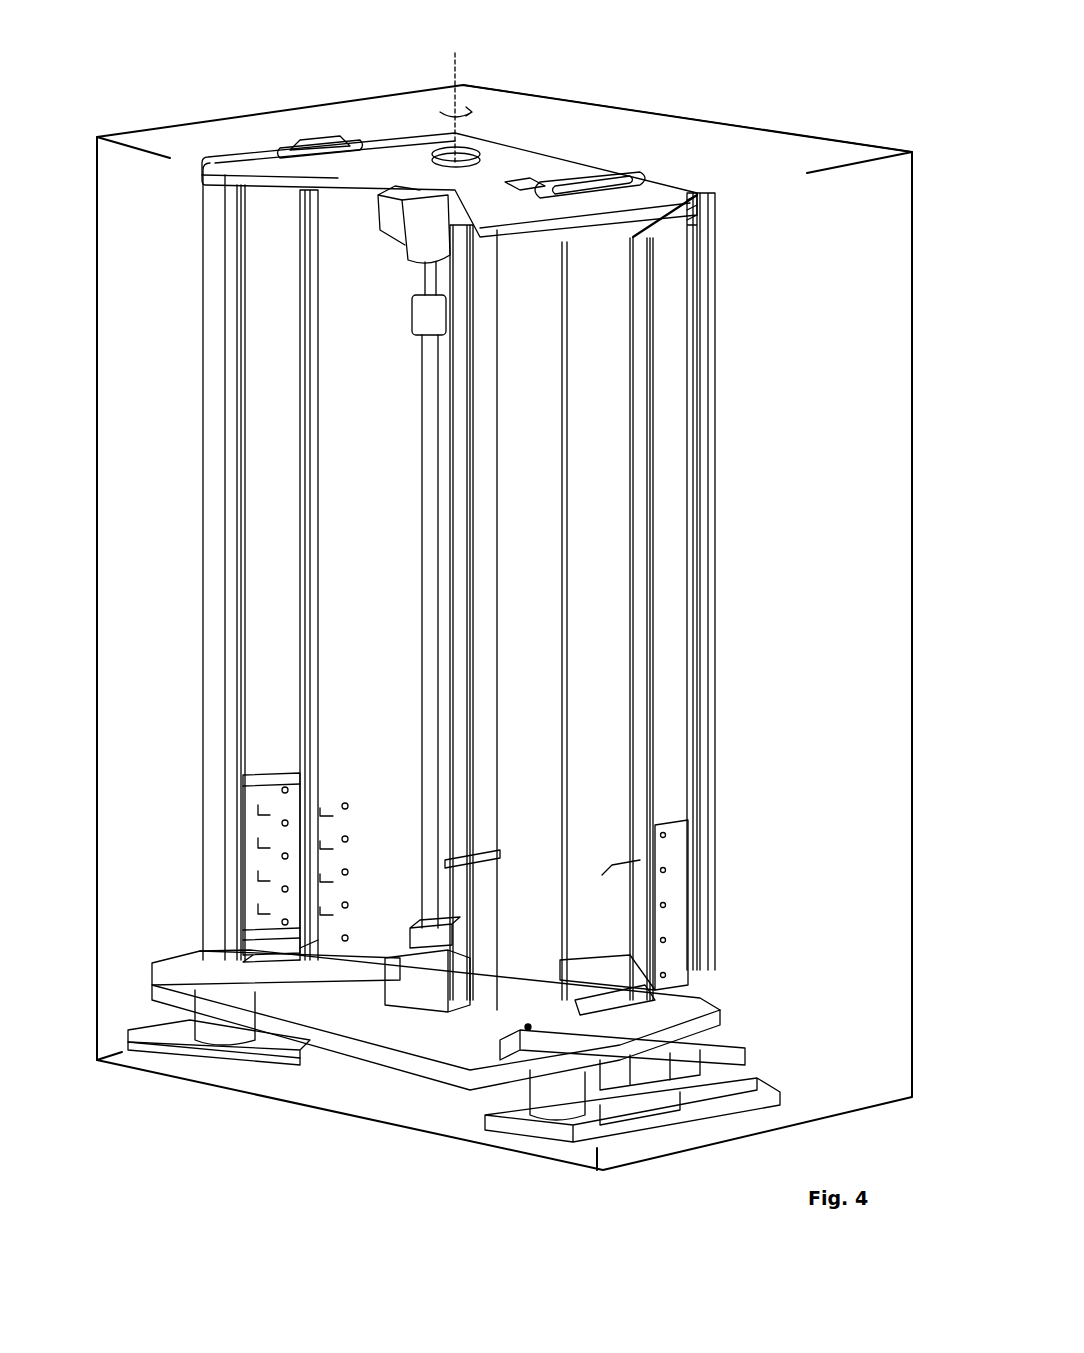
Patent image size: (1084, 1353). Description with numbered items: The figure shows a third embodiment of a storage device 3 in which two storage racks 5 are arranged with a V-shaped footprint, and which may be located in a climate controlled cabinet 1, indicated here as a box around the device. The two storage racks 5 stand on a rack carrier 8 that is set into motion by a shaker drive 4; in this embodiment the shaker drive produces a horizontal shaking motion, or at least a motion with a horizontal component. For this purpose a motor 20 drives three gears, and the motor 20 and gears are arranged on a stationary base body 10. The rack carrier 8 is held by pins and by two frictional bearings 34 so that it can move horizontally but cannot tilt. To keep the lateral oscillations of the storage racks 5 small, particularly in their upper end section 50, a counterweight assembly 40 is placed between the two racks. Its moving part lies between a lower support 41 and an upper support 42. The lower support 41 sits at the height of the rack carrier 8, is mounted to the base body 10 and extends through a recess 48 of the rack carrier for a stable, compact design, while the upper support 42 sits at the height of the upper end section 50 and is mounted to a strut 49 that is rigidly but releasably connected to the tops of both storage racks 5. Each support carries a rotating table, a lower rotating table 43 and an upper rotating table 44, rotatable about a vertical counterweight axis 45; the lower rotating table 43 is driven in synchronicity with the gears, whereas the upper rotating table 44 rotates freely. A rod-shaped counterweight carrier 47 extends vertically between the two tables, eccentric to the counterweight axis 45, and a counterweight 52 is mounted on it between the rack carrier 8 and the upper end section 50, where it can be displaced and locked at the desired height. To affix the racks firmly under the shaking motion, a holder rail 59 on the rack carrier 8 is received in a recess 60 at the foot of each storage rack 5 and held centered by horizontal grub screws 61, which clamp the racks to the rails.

The climate controlled cabinet 1 is at (572, 100).
The storage device 3 is at (795, 302).
The shaker drive 4 is at (792, 1059).
The storage racks 5 is at (427, 212).
The rack carrier 8 is at (180, 960).
The base body 10 is at (205, 1045).
The motor 20 is at (693, 1133).
The frictional bearings 34 is at (223, 1033).
The counterweight assembly 40 is at (375, 240).
The lower support 41 is at (413, 1000).
The upper support 42 is at (522, 185).
The lower rotating table 43 is at (423, 937).
The upper rotating table 44 is at (440, 232).
The counterweight axis 45 is at (455, 78).
The counterweight carrier 47 is at (428, 543).
The recess 48 is at (336, 1000).
The strut 49 is at (300, 165).
The upper end section 50 is at (770, 211).
The counterweight 52 is at (420, 322).
The holder rail 59 is at (283, 947).
The recess 60 is at (590, 1017).
The grub screws 61 is at (528, 1030).